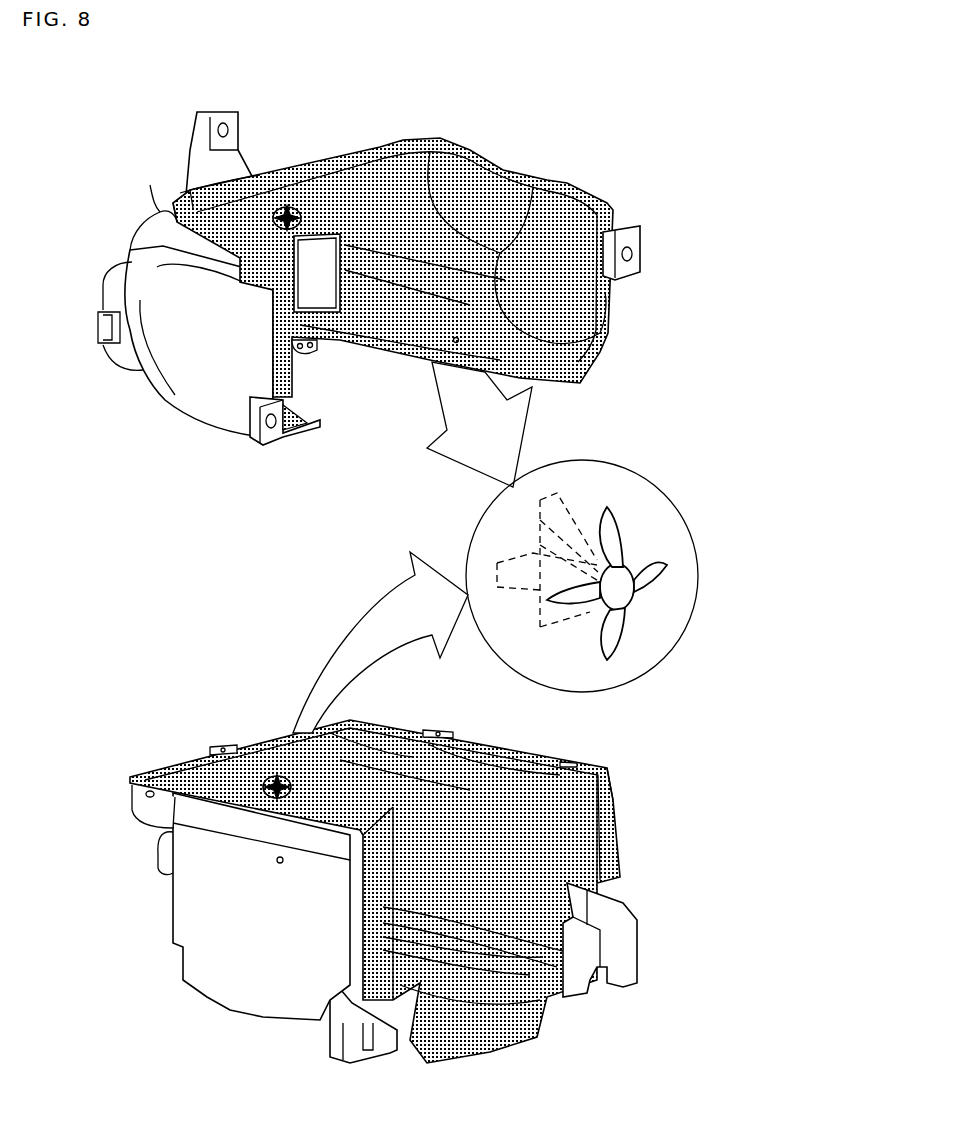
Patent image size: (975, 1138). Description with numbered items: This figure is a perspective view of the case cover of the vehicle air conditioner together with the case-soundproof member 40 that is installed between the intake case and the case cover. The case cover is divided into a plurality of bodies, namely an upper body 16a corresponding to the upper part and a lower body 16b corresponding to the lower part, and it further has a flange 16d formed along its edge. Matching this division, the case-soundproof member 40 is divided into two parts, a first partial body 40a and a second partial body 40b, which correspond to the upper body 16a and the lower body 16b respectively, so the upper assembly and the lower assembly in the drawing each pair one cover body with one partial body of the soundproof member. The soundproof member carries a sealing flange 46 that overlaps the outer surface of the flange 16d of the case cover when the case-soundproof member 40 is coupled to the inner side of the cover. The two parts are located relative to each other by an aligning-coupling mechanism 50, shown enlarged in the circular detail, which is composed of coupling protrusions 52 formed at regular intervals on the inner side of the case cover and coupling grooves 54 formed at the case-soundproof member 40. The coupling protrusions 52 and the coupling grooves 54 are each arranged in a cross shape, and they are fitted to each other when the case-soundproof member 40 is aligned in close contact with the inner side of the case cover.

The upper body 16a is at (153, 228).
The lower body 16b is at (210, 902).
The flange 16d is at (150, 185).
The case-soundproof member 40 is at (365, 562).
The first partial body 40a is at (380, 253).
The second partial body 40b is at (193, 780).
The sealing flange 46 is at (180, 193).
The aligning-coupling mechanism 50 is at (523, 448).
The coupling protrusions 52 is at (645, 610).
The coupling grooves 54 is at (648, 560).